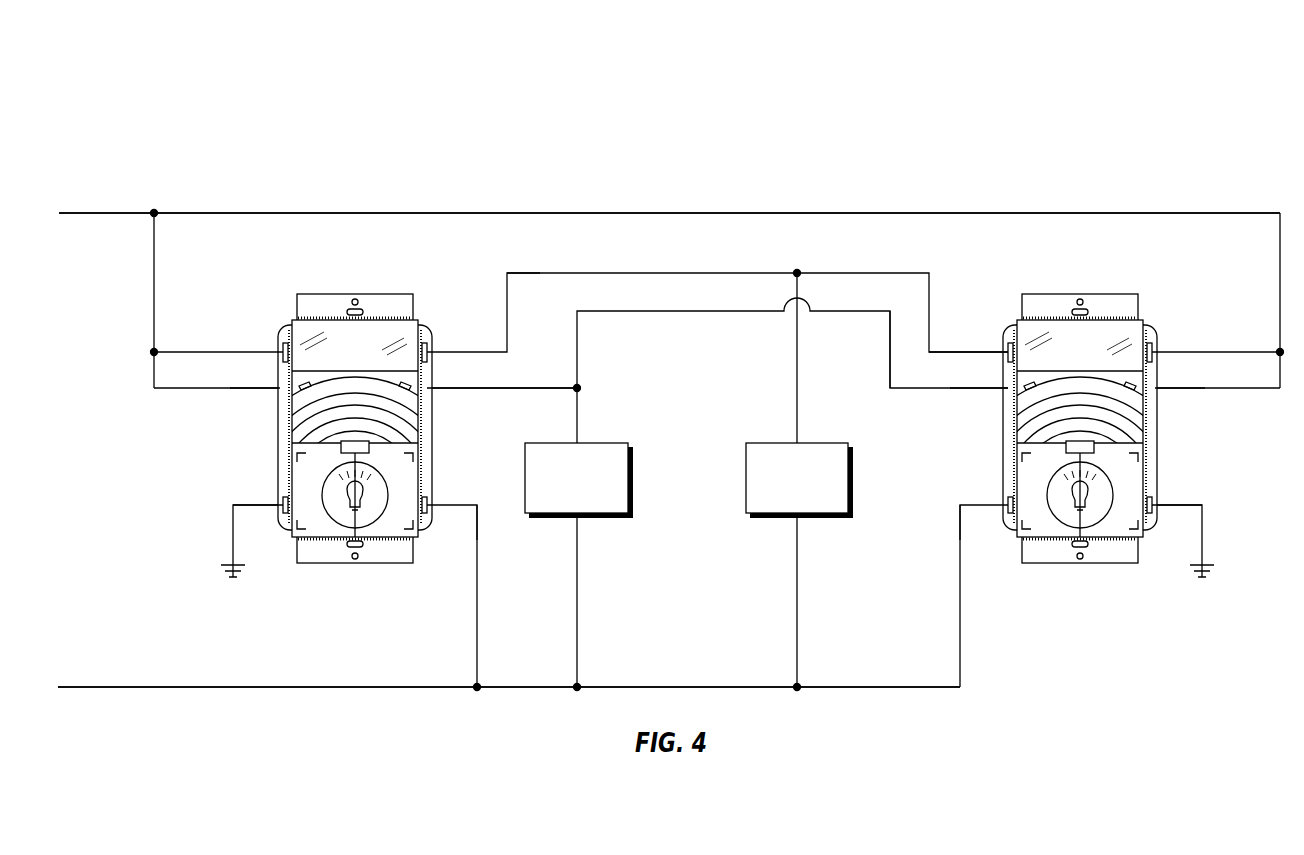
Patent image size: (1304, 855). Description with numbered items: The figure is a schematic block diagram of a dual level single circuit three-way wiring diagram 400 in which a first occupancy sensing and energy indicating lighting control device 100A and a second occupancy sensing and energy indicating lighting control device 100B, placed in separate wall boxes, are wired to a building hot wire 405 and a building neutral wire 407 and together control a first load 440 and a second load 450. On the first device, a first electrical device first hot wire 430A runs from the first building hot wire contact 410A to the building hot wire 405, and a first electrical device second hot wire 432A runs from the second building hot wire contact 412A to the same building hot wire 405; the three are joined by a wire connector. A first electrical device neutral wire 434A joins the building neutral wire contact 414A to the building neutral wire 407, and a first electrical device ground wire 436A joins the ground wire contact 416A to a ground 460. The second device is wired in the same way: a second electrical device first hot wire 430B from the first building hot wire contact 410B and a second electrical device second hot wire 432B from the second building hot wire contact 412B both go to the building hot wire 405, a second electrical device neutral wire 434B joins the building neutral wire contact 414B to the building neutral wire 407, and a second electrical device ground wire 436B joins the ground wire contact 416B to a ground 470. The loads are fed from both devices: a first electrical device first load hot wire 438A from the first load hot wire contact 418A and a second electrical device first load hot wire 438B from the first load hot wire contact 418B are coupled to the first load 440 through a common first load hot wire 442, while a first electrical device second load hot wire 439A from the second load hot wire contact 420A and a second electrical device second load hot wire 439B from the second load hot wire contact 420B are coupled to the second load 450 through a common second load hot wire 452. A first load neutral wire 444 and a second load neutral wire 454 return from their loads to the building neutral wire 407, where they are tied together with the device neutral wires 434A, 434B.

The dual level single circuit three-way wiring diagram 400 is at (1155, 103).
The building hot wire 405 is at (110, 213).
The building neutral wire 407 is at (110, 687).
The first occupancy sensing and energy indicating lighting control device 100A is at (355, 294).
The second occupancy sensing and energy indicating lighting control device 100B is at (1080, 294).
The first electrical device first building hot wire contact 410A is at (278, 352).
The second electrical device first building hot wire contact 410B is at (1157, 352).
The first electrical device second building hot wire contact 412A is at (278, 395).
The second electrical device second building hot wire contact 412B is at (1157, 395).
The first electrical device building neutral wire contact 414A is at (433, 503).
The second electrical device building neutral wire contact 414B is at (1003, 503).
The first electrical device ground wire contact 416A is at (278, 503).
The second electrical device ground wire contact 416B is at (1157, 503).
The first electrical device first load hot wire contact 418A is at (432, 350).
The second electrical device first load hot wire contact 418B is at (1003, 350).
The first electrical device second load hot wire contact 420A is at (435, 390).
The second electrical device second load hot wire contact 420B is at (1003, 392).
The first electrical device first hot wire 430A is at (168, 352).
The second electrical device first hot wire 430B is at (1278, 352).
The first electrical device second hot wire 432A is at (172, 388).
The second electrical device second hot wire 432B is at (1180, 388).
The first electrical device neutral wire 434A is at (477, 605).
The second electrical device neutral wire 434B is at (960, 603).
The first electrical device ground wire 436A is at (233, 540).
The second electrical device ground wire 436B is at (1202, 540).
The first electrical device first load hot wire 438A is at (600, 273).
The second electrical device first load hot wire 438B is at (835, 273).
The first electrical device second load hot wire 439A is at (440, 388).
The second electrical device second load hot wire 439B is at (892, 388).
The first load 440 is at (799, 480).
The first load hot wire 442 is at (797, 422).
The first load neutral wire 444 is at (797, 597).
The second load 450 is at (579, 480).
The second load hot wire 452 is at (577, 422).
The second load neutral wire 454 is at (577, 597).
The ground 460 is at (233, 575).
The ground 470 is at (1202, 575).